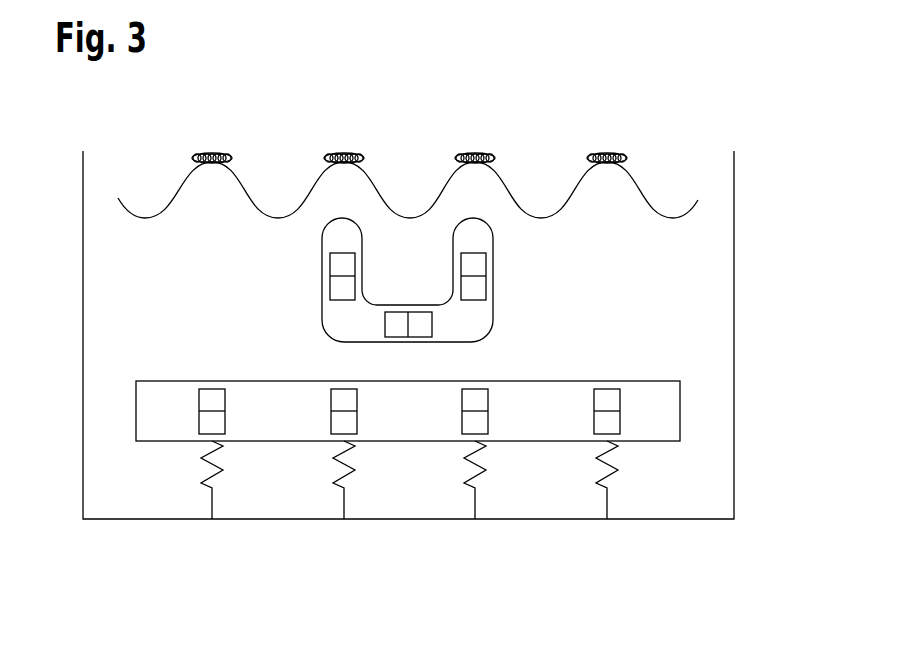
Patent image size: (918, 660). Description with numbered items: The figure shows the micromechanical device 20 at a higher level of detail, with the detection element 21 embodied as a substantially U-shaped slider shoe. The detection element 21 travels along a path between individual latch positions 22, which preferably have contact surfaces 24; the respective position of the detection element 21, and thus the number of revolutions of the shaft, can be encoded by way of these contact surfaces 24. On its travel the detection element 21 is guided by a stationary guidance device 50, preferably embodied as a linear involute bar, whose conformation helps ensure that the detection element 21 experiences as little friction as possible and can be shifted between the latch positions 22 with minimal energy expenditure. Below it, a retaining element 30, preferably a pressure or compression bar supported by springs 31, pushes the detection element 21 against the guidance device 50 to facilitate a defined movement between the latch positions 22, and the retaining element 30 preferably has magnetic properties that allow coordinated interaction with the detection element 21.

The micromechanical device 20 is at (182, 556).
The detection element 21 is at (493, 314).
The latch positions 22 is at (237, 200).
The contact surfaces 24 is at (210, 152).
The retaining element 30 is at (680, 412).
The springs 31 is at (612, 480).
The guidance device 50 is at (267, 220).